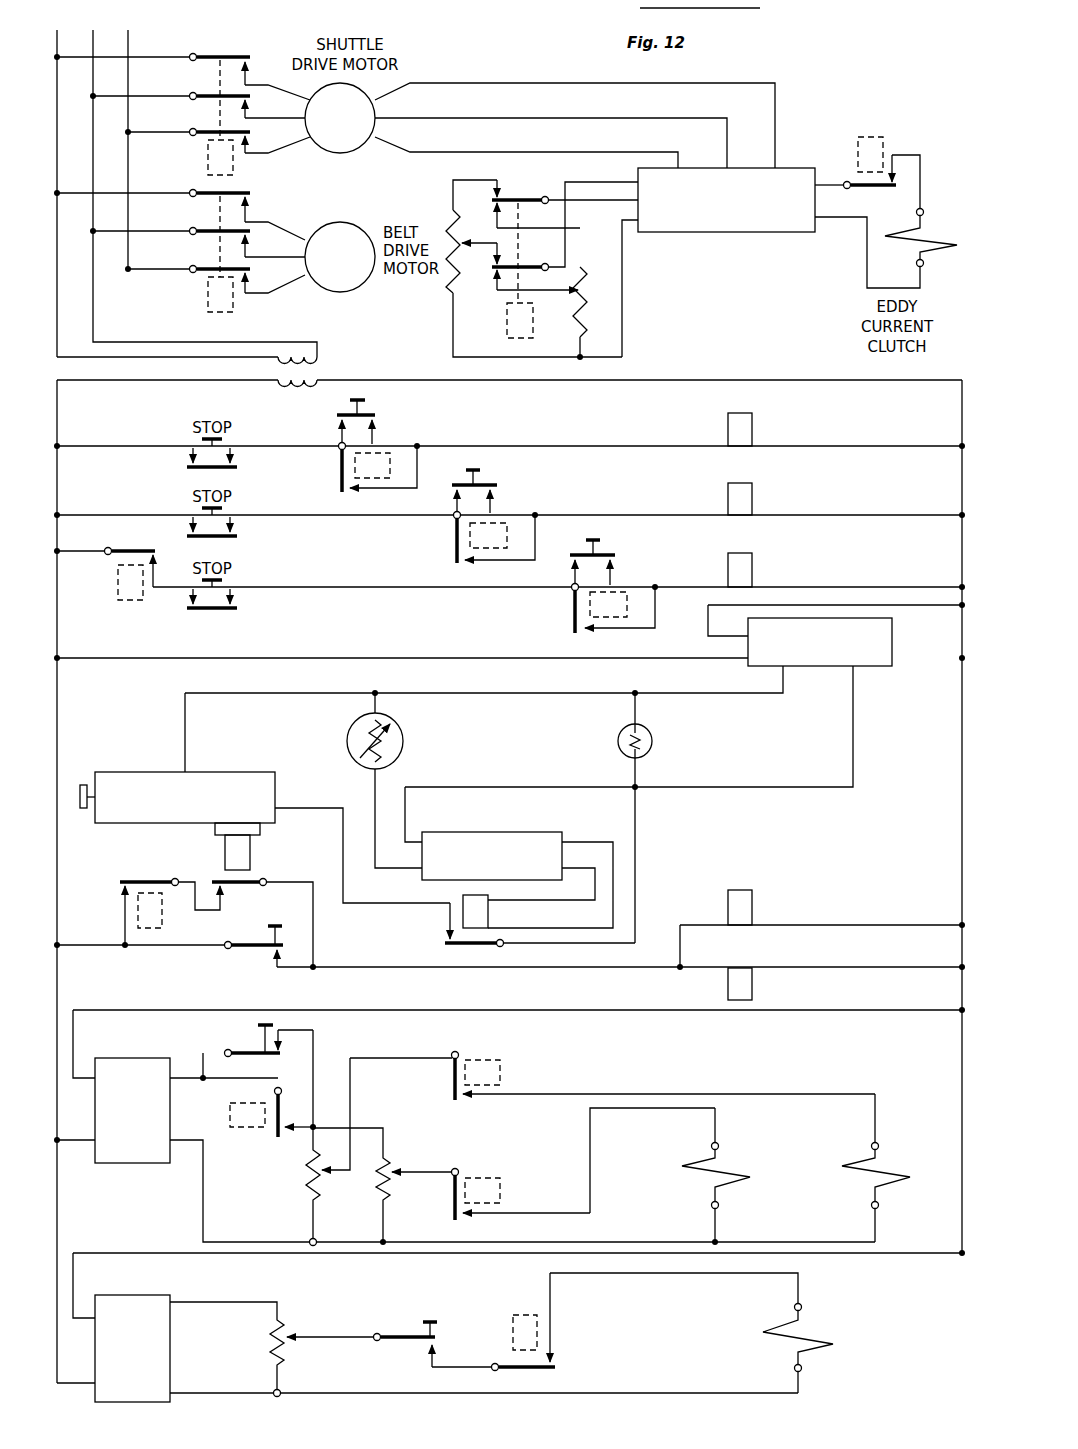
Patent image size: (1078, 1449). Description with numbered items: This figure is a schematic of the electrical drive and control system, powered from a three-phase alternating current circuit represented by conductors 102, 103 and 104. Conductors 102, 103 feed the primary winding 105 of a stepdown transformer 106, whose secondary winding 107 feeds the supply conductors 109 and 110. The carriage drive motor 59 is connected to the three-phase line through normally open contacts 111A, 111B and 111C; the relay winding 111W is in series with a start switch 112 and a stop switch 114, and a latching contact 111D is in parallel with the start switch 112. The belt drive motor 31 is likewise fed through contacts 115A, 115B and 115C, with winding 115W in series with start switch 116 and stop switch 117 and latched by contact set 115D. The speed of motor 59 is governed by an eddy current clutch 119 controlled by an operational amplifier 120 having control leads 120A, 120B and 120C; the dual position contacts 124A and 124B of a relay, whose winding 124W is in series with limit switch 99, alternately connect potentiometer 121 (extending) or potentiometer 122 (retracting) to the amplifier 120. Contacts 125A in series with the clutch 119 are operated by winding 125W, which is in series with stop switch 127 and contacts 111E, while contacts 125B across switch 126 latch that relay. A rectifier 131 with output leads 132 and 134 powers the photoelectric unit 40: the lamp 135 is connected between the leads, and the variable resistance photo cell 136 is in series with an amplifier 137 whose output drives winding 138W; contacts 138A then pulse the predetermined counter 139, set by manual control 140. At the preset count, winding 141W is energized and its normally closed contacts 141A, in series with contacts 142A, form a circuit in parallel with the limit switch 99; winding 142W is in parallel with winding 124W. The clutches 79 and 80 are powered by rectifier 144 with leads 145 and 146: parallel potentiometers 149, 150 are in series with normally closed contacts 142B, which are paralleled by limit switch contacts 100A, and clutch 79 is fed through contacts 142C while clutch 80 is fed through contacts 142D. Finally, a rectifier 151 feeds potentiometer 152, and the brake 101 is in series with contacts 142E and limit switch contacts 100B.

The conductor 102 is at (70, 12).
The conductor 103 is at (93, 32).
The conductor 104 is at (128, 32).
The normally open contact 111A is at (252, 59).
The normally open contact 111B is at (248, 106).
The normally open contact 111C is at (250, 141).
The carriage drive motor 59 is at (333, 153).
The normally open contact 115A is at (248, 214).
The normally open contact 115B is at (248, 242).
The normally open contact 115C is at (248, 280).
The belt drive motor 31 is at (352, 287).
The primary winding 105 is at (320, 356).
The stepdown transformer 106 is at (327, 377).
The secondary winding 107 is at (294, 386).
The supply conductor 109 is at (57, 426).
The supply conductor 110 is at (962, 404).
The stop switch 114 is at (193, 451).
The stop switch 117 is at (222, 520).
The stop switch 127 is at (216, 611).
The normally open contacts 111E is at (158, 562).
The start switch 112 is at (376, 413).
The start switch 116 is at (482, 478).
The start switch 126 is at (602, 549).
The normally open contact 111D is at (345, 496).
The relay contact set 115D is at (458, 566).
The contacts 125B is at (577, 636).
The winding 111W is at (754, 428).
The winding 115W is at (754, 496).
The winding 125W is at (754, 567).
The rectifier 131 is at (893, 645).
The output lead 132 is at (766, 695).
The output lead 134 is at (812, 788).
The potentiometer 121 is at (460, 242).
The dual position contacts 124A is at (500, 197).
The dual position contacts 124B is at (494, 272).
The control lead 120A is at (569, 187).
The control lead 120B is at (571, 199).
The control lead 120C is at (624, 254).
The operational amplifier 120 is at (736, 233).
The potentiometer 122 is at (592, 302).
The contacts 125A is at (897, 180).
The eddy current clutch 119 is at (936, 242).
The manual control 140 is at (83, 785).
The predetermined counter 139 is at (275, 797).
The winding 141W is at (251, 863).
The normally open contacts 142A is at (122, 890).
The normally closed contacts 141A is at (226, 891).
The limit switch 99 is at (290, 939).
The photoelectric unit 40 is at (342, 740).
The photo cell 136 is at (402, 752).
The amplifier 137 is at (486, 833).
The normally open contacts 138A is at (448, 941).
The winding 138W is at (489, 913).
The lamp 135 is at (646, 756).
The winding 142W is at (753, 902).
The winding 124W is at (753, 991).
The limit switch contacts 100A is at (283, 1046).
The rectifier 144 is at (118, 1060).
The output lead 145 is at (185, 1088).
The output lead 146 is at (204, 1191).
The potentiometer 149 is at (310, 1182).
The potentiometer 150 is at (384, 1160).
The normally closed contacts 142B is at (286, 1128).
The normally open contacts 142C is at (459, 1105).
The normally closed contacts 142D is at (458, 1225).
The clutch 80 is at (695, 1166).
The clutch 79 is at (857, 1150).
The rectifier 151 is at (170, 1357).
The potentiometer 152 is at (290, 1323).
The limit switch contacts 100B is at (436, 1345).
The normally open relay contacts 142E is at (560, 1363).
The brake 101 is at (802, 1348).